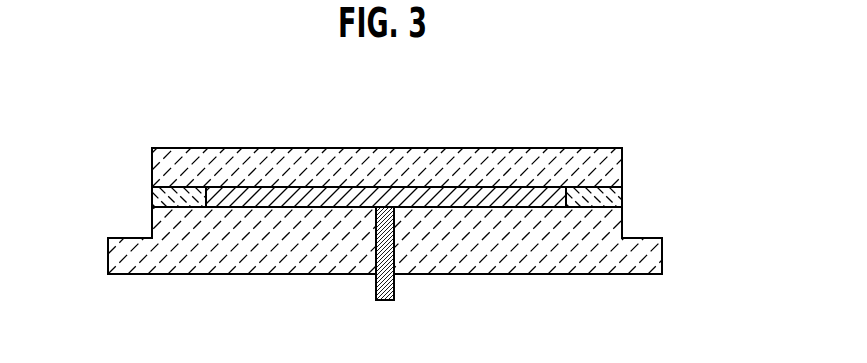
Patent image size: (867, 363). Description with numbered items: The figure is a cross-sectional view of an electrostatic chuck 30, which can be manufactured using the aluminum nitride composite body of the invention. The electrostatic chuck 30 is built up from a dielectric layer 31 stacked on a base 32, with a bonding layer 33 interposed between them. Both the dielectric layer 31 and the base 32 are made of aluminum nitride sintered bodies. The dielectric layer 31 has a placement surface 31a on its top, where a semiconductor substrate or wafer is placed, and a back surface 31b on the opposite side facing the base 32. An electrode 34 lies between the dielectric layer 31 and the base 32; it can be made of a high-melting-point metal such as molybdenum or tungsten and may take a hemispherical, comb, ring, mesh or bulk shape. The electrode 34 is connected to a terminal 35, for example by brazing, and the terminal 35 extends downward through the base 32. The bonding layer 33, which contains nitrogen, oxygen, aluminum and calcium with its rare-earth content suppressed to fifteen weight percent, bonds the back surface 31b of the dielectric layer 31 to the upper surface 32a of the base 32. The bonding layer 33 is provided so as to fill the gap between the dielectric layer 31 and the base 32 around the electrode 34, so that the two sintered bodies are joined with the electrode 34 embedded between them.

The electrostatic chuck 30 is at (401, 195).
The dielectric layer 31 is at (612, 157).
The placement surface 31a is at (197, 148).
The back surface 31b is at (262, 192).
The base 32 is at (652, 253).
The upper surface of the base 32a is at (317, 207).
The bonding layer 33 is at (160, 203).
The electrode 34 is at (493, 193).
The terminal 35 is at (395, 291).